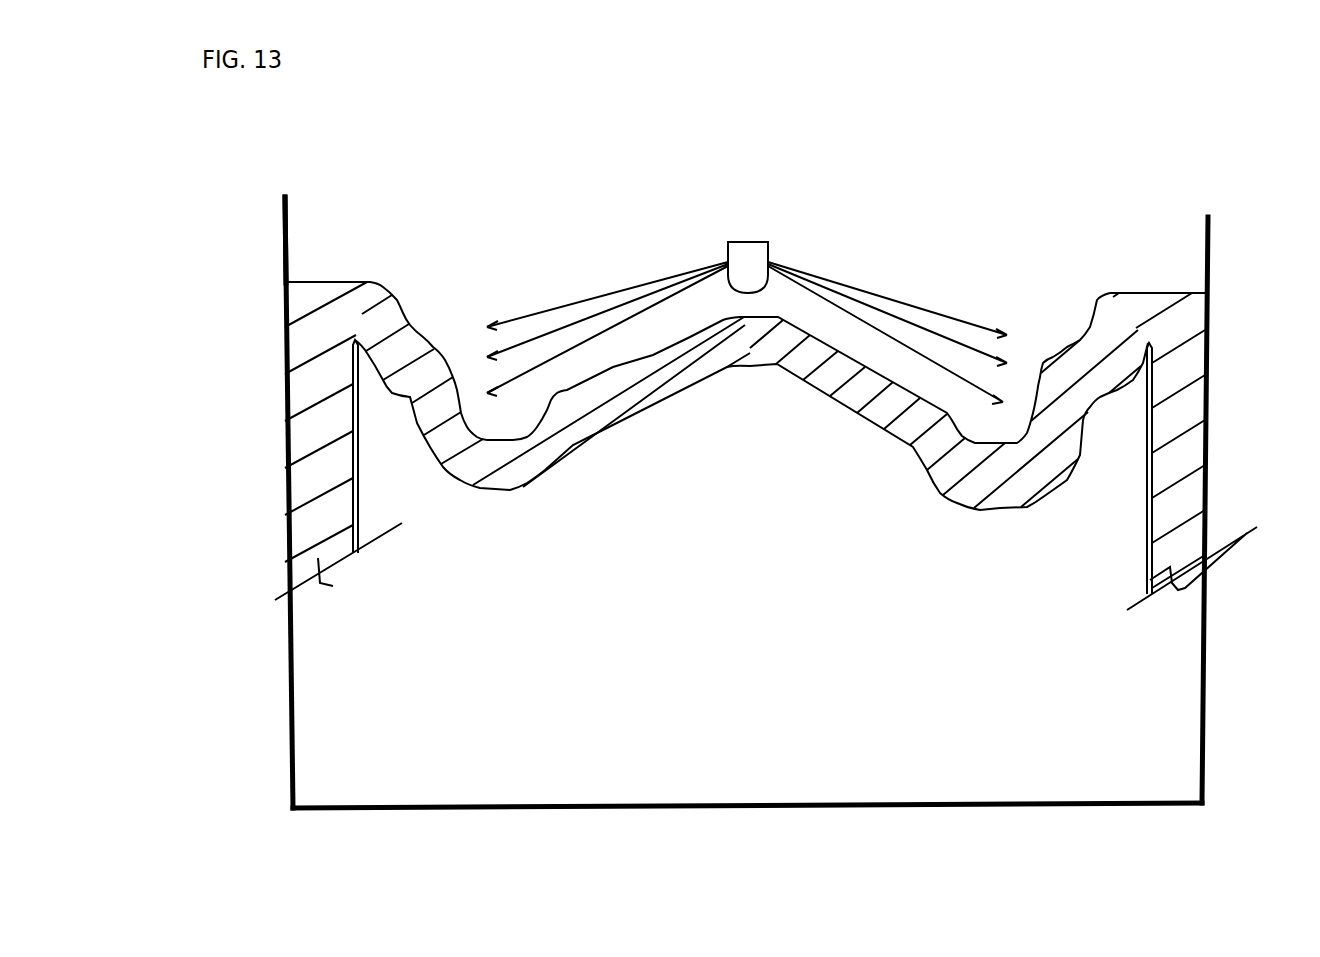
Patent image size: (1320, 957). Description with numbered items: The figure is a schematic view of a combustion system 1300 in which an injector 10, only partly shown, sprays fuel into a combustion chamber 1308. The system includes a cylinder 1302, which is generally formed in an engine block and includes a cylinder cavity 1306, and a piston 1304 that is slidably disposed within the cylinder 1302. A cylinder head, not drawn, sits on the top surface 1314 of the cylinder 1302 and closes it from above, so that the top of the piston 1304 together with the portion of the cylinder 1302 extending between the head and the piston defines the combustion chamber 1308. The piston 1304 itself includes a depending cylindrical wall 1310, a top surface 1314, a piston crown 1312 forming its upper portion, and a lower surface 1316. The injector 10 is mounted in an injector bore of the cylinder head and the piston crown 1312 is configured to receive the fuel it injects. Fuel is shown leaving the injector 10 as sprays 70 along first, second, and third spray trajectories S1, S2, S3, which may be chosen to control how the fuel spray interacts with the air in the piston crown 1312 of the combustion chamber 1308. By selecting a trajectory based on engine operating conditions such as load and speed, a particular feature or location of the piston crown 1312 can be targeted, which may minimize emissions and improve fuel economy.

The combustion system 1300 is at (1110, 90).
The cylinder 1302 is at (1207, 663).
The piston 1304 is at (1147, 525).
The cylinder cavity 1306 is at (297, 703).
The combustion chamber 1308 is at (323, 249).
The depending cylindrical wall 1310 is at (338, 498).
The piston crown 1312 is at (1070, 307).
The top surface 1314 is at (288, 199).
The lower surface 1316 is at (665, 460).
The injector 10 is at (752, 238).
The emitted beams 70 is at (491, 300).
The first spray trajectory S1 is at (953, 378).
The second spray trajectory S2 is at (943, 318).
The third spray trajectory S3 is at (1012, 337).